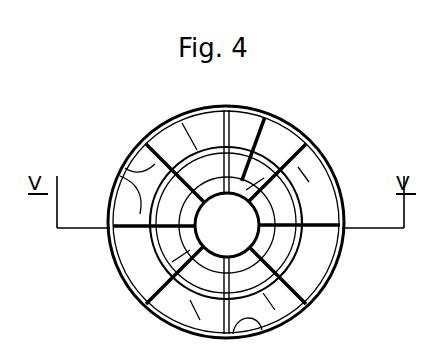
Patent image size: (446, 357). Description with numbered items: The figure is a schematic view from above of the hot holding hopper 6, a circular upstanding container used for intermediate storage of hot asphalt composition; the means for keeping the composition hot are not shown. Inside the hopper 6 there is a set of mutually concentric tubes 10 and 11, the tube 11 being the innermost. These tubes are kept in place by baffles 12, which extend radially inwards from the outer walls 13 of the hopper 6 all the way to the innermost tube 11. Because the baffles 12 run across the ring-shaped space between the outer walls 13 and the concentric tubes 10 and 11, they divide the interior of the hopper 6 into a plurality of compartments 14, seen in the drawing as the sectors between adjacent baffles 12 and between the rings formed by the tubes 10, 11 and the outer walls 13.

The hot holding hopper 6 is at (318, 124).
The concentric tube 10 is at (297, 185).
The innermost tube 11 is at (199, 217).
The baffles 12 is at (125, 168).
The outer walls 13 is at (320, 287).
The compartments 14 is at (175, 143).